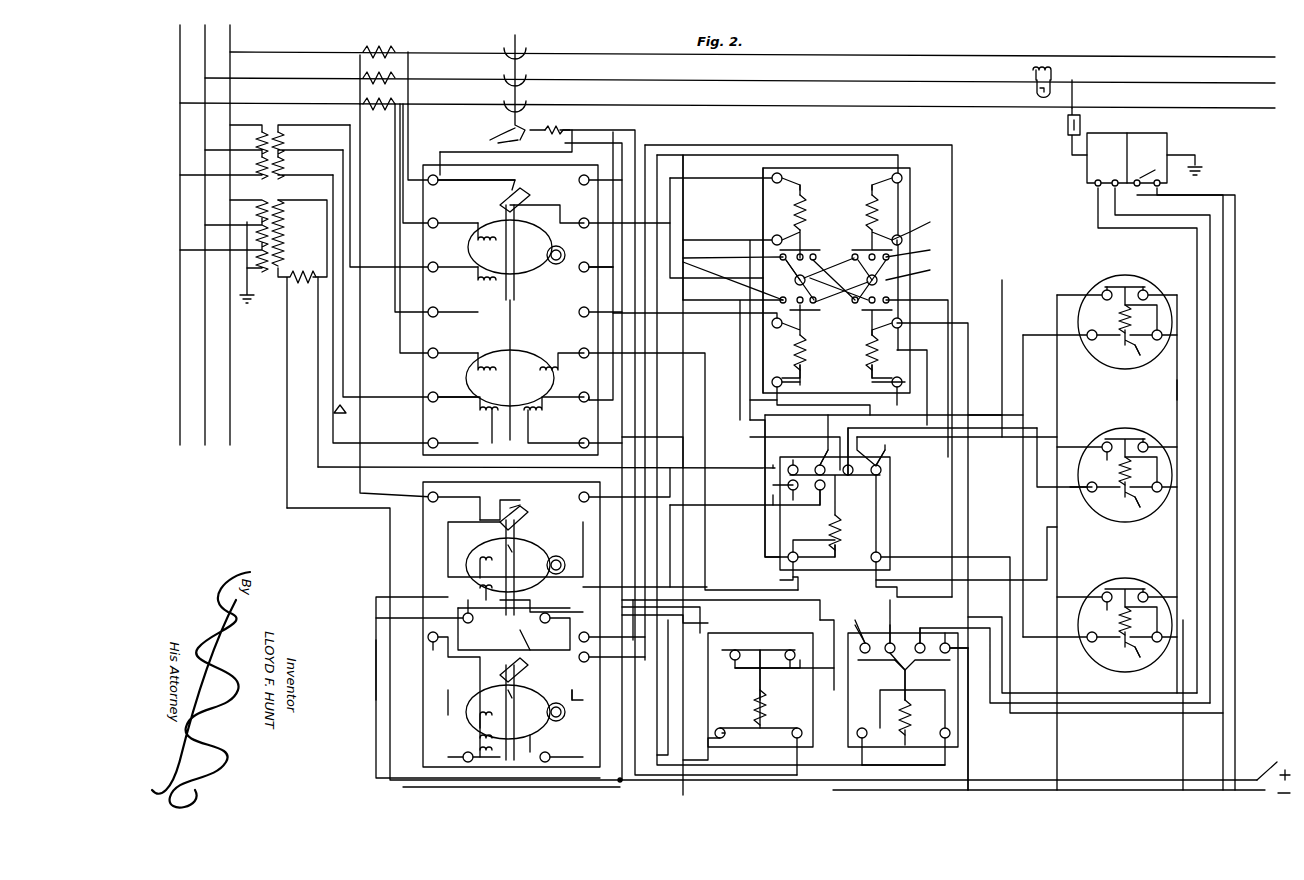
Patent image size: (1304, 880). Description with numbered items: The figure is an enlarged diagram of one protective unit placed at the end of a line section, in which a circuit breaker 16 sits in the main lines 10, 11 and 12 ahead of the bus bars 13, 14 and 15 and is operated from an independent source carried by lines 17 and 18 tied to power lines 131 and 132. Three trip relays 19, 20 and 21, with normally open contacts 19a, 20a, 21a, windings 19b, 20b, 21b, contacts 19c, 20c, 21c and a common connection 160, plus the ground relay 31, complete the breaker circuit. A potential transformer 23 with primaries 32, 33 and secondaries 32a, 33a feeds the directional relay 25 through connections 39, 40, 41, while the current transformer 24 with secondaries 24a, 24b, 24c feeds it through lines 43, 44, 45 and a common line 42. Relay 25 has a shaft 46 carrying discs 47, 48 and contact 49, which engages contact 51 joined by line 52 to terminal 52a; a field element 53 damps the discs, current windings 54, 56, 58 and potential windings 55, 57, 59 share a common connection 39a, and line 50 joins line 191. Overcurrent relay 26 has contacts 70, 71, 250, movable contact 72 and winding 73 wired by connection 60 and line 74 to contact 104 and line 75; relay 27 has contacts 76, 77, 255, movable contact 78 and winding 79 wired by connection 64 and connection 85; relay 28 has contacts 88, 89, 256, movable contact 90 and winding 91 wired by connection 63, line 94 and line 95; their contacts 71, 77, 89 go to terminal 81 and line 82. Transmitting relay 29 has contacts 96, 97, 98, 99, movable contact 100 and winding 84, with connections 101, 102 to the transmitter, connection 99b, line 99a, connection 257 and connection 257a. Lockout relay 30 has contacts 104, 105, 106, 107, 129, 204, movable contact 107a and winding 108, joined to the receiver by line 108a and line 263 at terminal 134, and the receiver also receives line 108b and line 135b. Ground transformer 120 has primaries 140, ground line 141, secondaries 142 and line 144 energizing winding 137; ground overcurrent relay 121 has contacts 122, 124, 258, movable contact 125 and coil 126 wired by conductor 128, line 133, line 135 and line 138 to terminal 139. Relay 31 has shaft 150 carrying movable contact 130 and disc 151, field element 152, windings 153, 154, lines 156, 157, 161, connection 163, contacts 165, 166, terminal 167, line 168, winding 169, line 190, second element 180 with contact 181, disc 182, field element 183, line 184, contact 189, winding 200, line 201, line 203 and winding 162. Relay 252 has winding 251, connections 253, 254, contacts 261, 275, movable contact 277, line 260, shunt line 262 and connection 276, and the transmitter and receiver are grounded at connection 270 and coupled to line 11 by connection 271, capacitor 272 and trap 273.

The main line 10 is at (878, 53).
The main line 11 is at (916, 80).
The main line 12 is at (950, 105).
The bus bar 13 is at (228, 402).
The bus bar 14 is at (204, 378).
The bus bar 15 is at (180, 356).
The circuit breaker 16 is at (514, 48).
The line 17 is at (602, 132).
The line 18 is at (618, 143).
The trip relay 19 is at (1072, 275).
The movable contact 19a is at (1145, 290).
The winding 19b is at (1130, 354).
The contact 19c is at (1108, 290).
The trip relay 20 is at (1105, 422).
The movable contact 20a is at (1145, 440).
The winding 20b is at (1127, 506).
The contact 20c is at (1106, 453).
The trip relay 21 is at (1100, 572).
The movable contact 21a is at (1145, 590).
The winding 21b is at (1128, 656).
The contact 21c is at (1106, 603).
The potential transformer 23 is at (278, 128).
The current transformer 24 is at (410, 50).
The secondary winding 24a is at (368, 50).
The secondary winding 24b is at (366, 78).
The secondary winding 24c is at (366, 104).
The directional relay 25 is at (430, 145).
The overcurrent relay 26 is at (745, 205).
The overcurrent relay 27 is at (925, 186).
The overcurrent relay 28 is at (742, 378).
The transmitting relay 29 is at (975, 735).
The lockout relay 30 is at (908, 498).
The ground relay 31 is at (364, 553).
The primary winding 32 is at (260, 140).
The secondary winding 32a is at (282, 140).
The primary winding 33 is at (260, 163).
The secondary winding 33a is at (282, 163).
The connection 39 is at (351, 201).
The common connection 39a is at (610, 296).
The connection 40 is at (344, 221).
The connection 41 is at (334, 242).
The common line 42 is at (361, 290).
The line 43 is at (407, 130).
The line 44 is at (402, 152).
The line 45 is at (394, 172).
The rotatable shaft 46 is at (514, 297).
The disc 47 is at (510, 252).
The disc 48 is at (510, 378).
The contact 49 is at (530, 193).
The line 50 is at (552, 206).
The stationary contact 51 is at (508, 185).
The line 52 is at (460, 152).
The terminal 52a is at (760, 262).
The fixed field element 53 is at (566, 253).
The winding 54 is at (480, 235).
The winding 55 is at (484, 284).
The winding 56 is at (482, 366).
The winding 57 is at (478, 407).
The directional winding 58 is at (548, 366).
The winding 59 is at (530, 415).
The connection 60 is at (740, 178).
The connection 63 is at (697, 353).
The connection 64 is at (880, 160).
The stationary contact 70 is at (748, 240).
The stationary contact 71 is at (805, 250).
The movable contact 72 is at (804, 184).
The winding 73 is at (808, 205).
The line 74 is at (750, 406).
The line 75 is at (1023, 379).
The stationary contact 76 is at (858, 256).
The stationary contact 77 is at (918, 248).
The movable contact 78 is at (868, 188).
The winding 79 is at (866, 207).
The terminal 81 is at (918, 270).
The line 82 is at (968, 345).
The winding 84 is at (900, 700).
The connection 85 is at (930, 350).
The stationary contact 88 is at (745, 300).
The stationary contact 89 is at (806, 312).
The movable contact 90 is at (812, 377).
The winding 91 is at (804, 348).
The line 94 is at (872, 408).
The line 95 is at (1002, 445).
The stationary contact 96 is at (918, 640).
The stationary contact 97 is at (968, 652).
The stationary contact 98 is at (862, 640).
The stationary contact 99 is at (895, 665).
The line 99a is at (898, 590).
The connection 99b is at (834, 710).
The movable contact 100 is at (906, 682).
The connection 101 is at (1115, 692).
The connection 102 is at (1118, 715).
The stationary contact 104 is at (815, 462).
The stationary contact 105 is at (882, 468).
The stationary contact 106 is at (849, 480).
The stationary contact 107 is at (790, 463).
The movable contact 107a is at (819, 556).
The winding 108 is at (840, 528).
The line 108a is at (925, 556).
The conductor 108b is at (1236, 294).
The ground transformer 120 is at (276, 203).
The ground overcurrent relay 121 is at (936, 368).
The stationary contact 122 is at (852, 315).
The stationary contact 124 is at (918, 373).
The movable contact 125 is at (868, 370).
The coil 126 is at (866, 347).
The conductor 128 is at (768, 466).
The stationary contact 129 is at (786, 486).
The movable contact 130 is at (530, 535).
The power line 131 is at (1245, 778).
The power line 132 is at (1272, 778).
The line 133 is at (708, 546).
The terminal 134 is at (1160, 185).
The line 135 is at (340, 468).
The conductor 135b is at (955, 210).
The transformer winding 137 is at (302, 274).
The line 138 is at (970, 500).
The terminal 139 is at (540, 752).
The primary winding 140 is at (258, 262).
The common ground line 141 is at (250, 296).
The secondary winding 142 is at (282, 224).
The line 144 is at (322, 200).
The movable shaft 150 is at (522, 588).
The disc 151 is at (508, 567).
The fixed field element 152 is at (562, 558).
The winding 153 is at (482, 556).
The winding 154 is at (491, 613).
The line 156 is at (682, 466).
The line 157 is at (765, 558).
The common connection 160 is at (1175, 395).
The line 161 is at (375, 640).
The winding 162 is at (496, 757).
The connection 163 is at (576, 691).
The stationary contact 165 is at (515, 505).
The stationary contact 166 is at (530, 515).
The terminal 167 is at (438, 653).
The line 168 is at (434, 700).
The winding 169 is at (478, 745).
The movable element 180 is at (530, 692).
The movable contact 181 is at (530, 670).
The disc 182 is at (508, 712).
The fixed field element 183 is at (563, 718).
The line 184 is at (470, 630).
The stationary contact 189 is at (525, 656).
The line 190 is at (612, 618).
The line 191 is at (646, 710).
The winding 200 is at (478, 716).
The line 201 is at (285, 486).
The line 203 is at (700, 610).
The stationary contact 204 is at (818, 492).
The stationary contact 250 is at (804, 248).
The winding 251 is at (756, 700).
The relay 252 is at (715, 755).
The connection 253 is at (718, 437).
The connection 254 is at (750, 730).
The stationary contact 255 is at (905, 240).
The stationary contact 256 is at (760, 315).
The connection 257 is at (760, 590).
The connection 257a is at (865, 765).
The stationary contact 258 is at (958, 318).
The line 260 is at (621, 684).
The stationary contact 261 is at (740, 650).
The shunt line 262 is at (805, 670).
The line 263 is at (1240, 315).
The ground connection 270 is at (1195, 155).
The connection 271 is at (1076, 95).
The coupling capacitor 272 is at (1065, 124).
The radio frequency trap 273 is at (1048, 70).
The stationary contact 275 is at (792, 650).
The connection 276 is at (888, 640).
The movable contact 277 is at (758, 678).